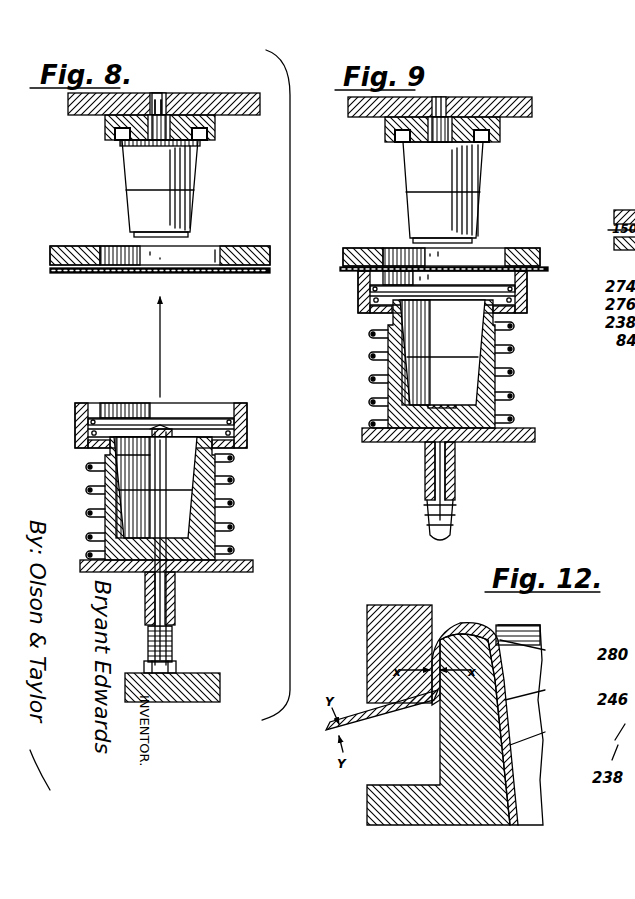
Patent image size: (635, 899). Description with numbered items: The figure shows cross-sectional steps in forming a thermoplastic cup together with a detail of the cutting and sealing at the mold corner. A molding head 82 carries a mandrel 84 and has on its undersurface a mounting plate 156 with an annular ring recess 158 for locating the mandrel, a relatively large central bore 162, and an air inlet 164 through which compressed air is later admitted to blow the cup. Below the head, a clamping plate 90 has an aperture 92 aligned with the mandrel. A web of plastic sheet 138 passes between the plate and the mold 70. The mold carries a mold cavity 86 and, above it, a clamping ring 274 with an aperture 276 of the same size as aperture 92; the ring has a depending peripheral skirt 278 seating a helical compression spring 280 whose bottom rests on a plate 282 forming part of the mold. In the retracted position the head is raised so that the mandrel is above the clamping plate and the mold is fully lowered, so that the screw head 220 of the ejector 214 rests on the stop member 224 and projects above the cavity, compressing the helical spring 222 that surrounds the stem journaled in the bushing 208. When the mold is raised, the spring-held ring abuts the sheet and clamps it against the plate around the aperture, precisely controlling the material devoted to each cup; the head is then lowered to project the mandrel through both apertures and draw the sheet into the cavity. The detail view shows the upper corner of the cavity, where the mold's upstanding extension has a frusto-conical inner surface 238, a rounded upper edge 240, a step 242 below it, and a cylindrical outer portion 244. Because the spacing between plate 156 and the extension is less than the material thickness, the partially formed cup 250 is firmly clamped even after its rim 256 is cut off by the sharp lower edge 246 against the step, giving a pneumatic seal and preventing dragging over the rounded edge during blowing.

In FIG. 8, the mold 70 is at (270, 577).
In FIG. 8, the molding head 82 is at (240, 100).
In FIG. 9, the molding head 82 is at (514, 97).
In FIG. 8, the mandrel 84 is at (132, 176).
In FIG. 9, the mandrel 84 is at (470, 160).
In FIG. 8, the mold cavity 86 is at (185, 507).
In FIG. 9, the mold cavity 86 is at (462, 340).
In FIG. 8, the clamping plate 90 is at (250, 250).
In FIG. 9, the clamping plate 90 is at (531, 250).
In FIG. 8, the aperture 92 is at (206, 250).
In FIG. 9, the aperture 92 is at (484, 256).
In FIG. 8, the plastic sheet 138 is at (224, 274).
In FIG. 9, the plastic sheet 138 is at (548, 270).
In FIG. 8, the mounting plate 156 is at (106, 124).
In FIG. 9, the mounting plate 156 is at (388, 126).
In FIG. 12, the mounting plate 156 is at (408, 612).
In FIG. 8, the annular ring recess 158 is at (118, 140).
In FIG. 8, the central bore 162 is at (165, 115).
In FIG. 8, the air inlet 164 is at (158, 95).
In FIG. 8, the bushing 208 is at (176, 587).
In FIG. 8, the ejector 214 is at (152, 459).
In FIG. 9, the ejector 214 is at (440, 472).
In FIG. 8, the screw head 220 is at (170, 664).
In FIG. 8, the helical spring 222 is at (170, 640).
In FIG. 8, the stop member 224 is at (206, 681).
In FIG. 8, the frusto-conical inner surface 238 is at (100, 445).
In FIG. 9, the frusto-conical inner surface 238 is at (396, 318).
In FIG. 12, the frusto-conical inner surface 238 is at (522, 646).
In FIG. 12, the rounded upper edge 240 is at (490, 628).
In FIG. 12, the step 242 is at (436, 727).
In FIG. 12, the cylindrical outer portion 244 is at (452, 752).
In FIG. 12, the sharp lower edge 246 is at (436, 700).
In FIG. 12, the cup 250 is at (507, 748).
In FIG. 12, the rolled over rim 256 is at (505, 700).
In FIG. 8, the clamping ring 274 is at (245, 408).
In FIG. 9, the clamping ring 274 is at (362, 283).
In FIG. 8, the aperture 276 is at (200, 405).
In FIG. 9, the aperture 276 is at (464, 276).
In FIG. 8, the depending peripheral skirt 278 is at (247, 436).
In FIG. 9, the depending peripheral skirt 278 is at (368, 302).
In FIG. 8, the helical compression spring 280 is at (230, 485).
In FIG. 9, the helical compression spring 280 is at (500, 392).
In FIG. 8, the plate 282 is at (250, 563).
In FIG. 9, the plate 282 is at (521, 433).